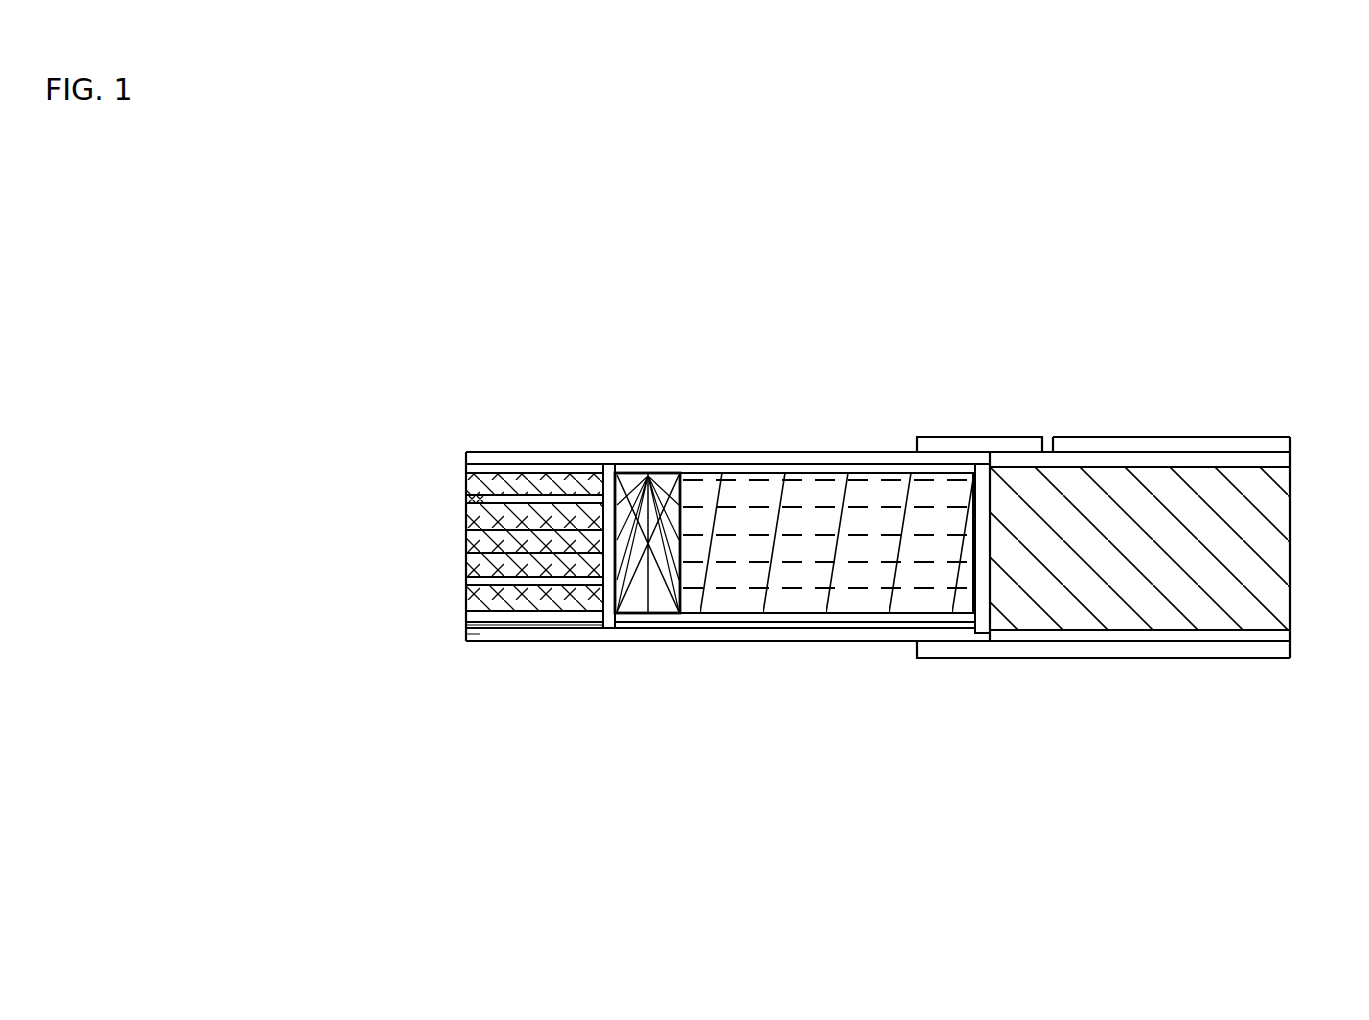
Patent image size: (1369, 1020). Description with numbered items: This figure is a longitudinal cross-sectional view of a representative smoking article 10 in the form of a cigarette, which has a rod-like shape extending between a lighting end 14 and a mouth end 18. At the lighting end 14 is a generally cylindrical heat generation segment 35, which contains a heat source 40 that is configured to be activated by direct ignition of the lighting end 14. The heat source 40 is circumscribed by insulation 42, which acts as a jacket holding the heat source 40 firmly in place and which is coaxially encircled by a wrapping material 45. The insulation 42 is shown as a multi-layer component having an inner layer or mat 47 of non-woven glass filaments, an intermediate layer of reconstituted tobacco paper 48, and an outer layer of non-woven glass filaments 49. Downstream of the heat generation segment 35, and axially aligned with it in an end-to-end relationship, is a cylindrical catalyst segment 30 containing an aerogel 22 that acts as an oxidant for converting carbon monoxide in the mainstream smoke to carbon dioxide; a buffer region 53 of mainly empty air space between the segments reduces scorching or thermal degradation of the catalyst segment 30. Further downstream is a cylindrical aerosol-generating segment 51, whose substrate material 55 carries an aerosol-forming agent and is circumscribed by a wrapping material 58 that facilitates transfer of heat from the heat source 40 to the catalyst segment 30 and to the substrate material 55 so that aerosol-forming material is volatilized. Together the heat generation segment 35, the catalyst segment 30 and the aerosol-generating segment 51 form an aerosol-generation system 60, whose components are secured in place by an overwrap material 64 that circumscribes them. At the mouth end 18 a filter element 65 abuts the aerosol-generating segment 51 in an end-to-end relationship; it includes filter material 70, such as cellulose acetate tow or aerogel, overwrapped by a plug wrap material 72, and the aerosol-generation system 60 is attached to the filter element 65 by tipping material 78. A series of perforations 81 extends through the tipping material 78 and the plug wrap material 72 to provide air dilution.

The smoking article 10 is at (815, 308).
The lighting end 14 is at (340, 547).
The mouth end 18 is at (1298, 422).
The aerogel 22 is at (665, 610).
The catalyst segment 30 is at (652, 648).
The heat generation segment 35 is at (508, 433).
The heat source 40 is at (547, 550).
The insulation 42 is at (535, 600).
The wrapping material 45 is at (493, 625).
The inner layer or mat of non-woven glass filaments 47 is at (495, 510).
The intermediate layer of reconstituted tobacco paper 48 is at (467, 500).
The outer layer of non-woven glass filaments 49 is at (533, 480).
The aerosol-generating segment 51 is at (828, 447).
The buffer region 53 is at (607, 500).
The substrate material 55 is at (735, 495).
The wrapping material 58 is at (655, 478).
The aerosol-generation system 60 is at (560, 665).
The overwrap material 64 is at (478, 633).
The filter element 65 is at (1138, 427).
The filter material 70 is at (1173, 598).
The plug wrap material 72 is at (1095, 633).
The tipping material 78 is at (1205, 450).
The perforations 81 is at (1047, 460).